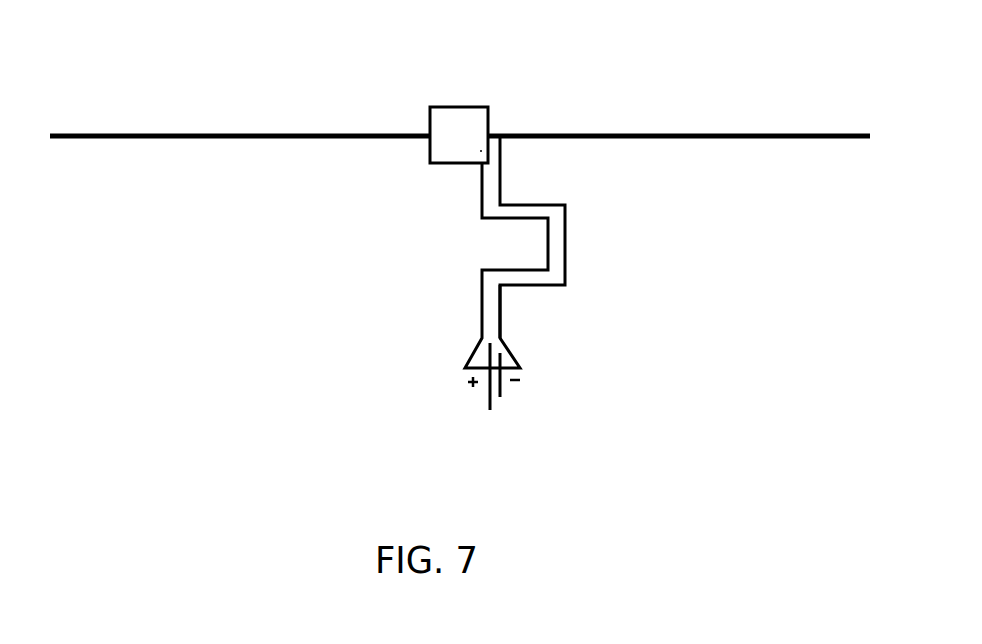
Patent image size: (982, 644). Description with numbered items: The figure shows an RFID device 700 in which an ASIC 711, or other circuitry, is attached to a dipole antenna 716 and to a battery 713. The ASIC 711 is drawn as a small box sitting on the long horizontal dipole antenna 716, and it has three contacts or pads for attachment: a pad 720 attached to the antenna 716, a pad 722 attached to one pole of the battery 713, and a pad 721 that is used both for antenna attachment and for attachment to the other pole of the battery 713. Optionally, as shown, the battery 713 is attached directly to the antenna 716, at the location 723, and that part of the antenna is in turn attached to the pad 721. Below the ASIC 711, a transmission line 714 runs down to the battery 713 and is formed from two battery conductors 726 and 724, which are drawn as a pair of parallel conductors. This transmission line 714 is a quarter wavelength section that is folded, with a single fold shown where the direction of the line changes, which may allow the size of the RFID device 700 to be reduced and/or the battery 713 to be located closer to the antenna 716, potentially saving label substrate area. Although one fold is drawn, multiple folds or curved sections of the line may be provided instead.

The RFID device 700 is at (160, 428).
The dipole antenna 716 is at (553, 130).
The pad 720 is at (430, 135).
The pad 721 is at (488, 133).
The antenna attachment location 723 is at (500, 135).
The ASIC 711 is at (427, 160).
The pad 722 is at (480, 150).
The transmission line 714 is at (572, 242).
The battery conductor 726 is at (480, 315).
The battery conductor 724 is at (503, 318).
The battery 713 is at (483, 398).